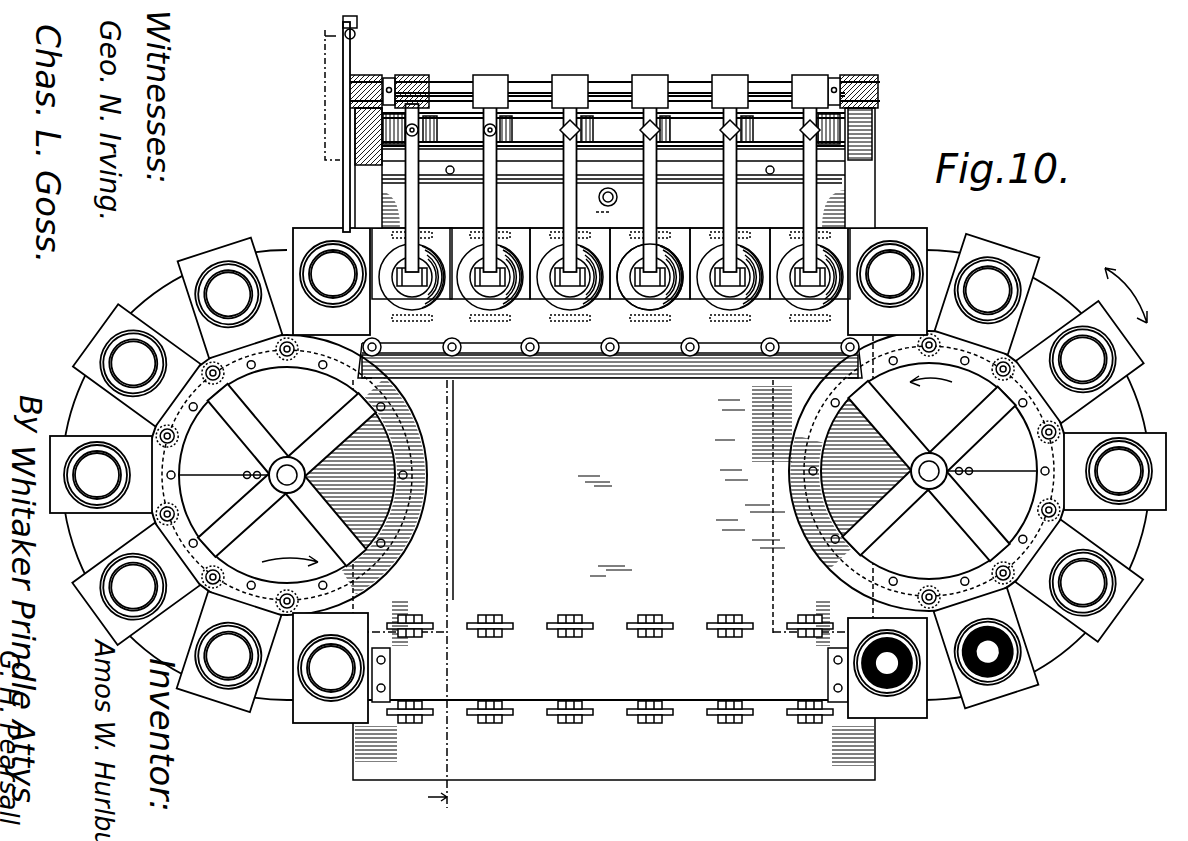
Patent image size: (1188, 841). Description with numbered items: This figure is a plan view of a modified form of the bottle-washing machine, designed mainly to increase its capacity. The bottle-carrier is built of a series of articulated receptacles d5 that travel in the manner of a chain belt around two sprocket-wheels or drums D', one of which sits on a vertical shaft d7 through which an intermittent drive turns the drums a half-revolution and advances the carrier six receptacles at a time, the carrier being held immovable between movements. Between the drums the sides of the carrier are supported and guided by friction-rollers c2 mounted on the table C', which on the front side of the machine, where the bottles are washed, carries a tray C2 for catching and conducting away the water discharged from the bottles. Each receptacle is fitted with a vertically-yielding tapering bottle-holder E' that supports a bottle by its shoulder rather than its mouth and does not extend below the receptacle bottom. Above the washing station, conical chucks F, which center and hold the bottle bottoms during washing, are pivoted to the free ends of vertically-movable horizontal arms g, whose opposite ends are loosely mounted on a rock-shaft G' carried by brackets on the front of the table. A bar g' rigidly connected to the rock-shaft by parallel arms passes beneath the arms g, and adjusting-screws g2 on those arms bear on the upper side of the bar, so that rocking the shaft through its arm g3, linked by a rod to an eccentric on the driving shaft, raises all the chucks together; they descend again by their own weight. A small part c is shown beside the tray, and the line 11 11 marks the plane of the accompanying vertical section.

The rock-shaft G' is at (612, 78).
The adjusting-screws g2 is at (420, 131).
The bar g' is at (652, 129).
The vertically-movable horizontal arms g is at (556, 188).
The arm g3 is at (338, 70).
The section line 11 11 is at (319, 35).
The tray C2 is at (615, 243).
The pin c is at (598, 194).
The conical chuck F is at (664, 244).
The articulated receptacles d5 is at (608, 475).
The vertical shaft d7 is at (137, 365).
The sprocket-wheels or drums D' is at (608, 473).
The table C' is at (606, 520).
The friction-rollers c2 is at (505, 630).
The vertically-yielding tapering bottle-holders E' is at (943, 670).